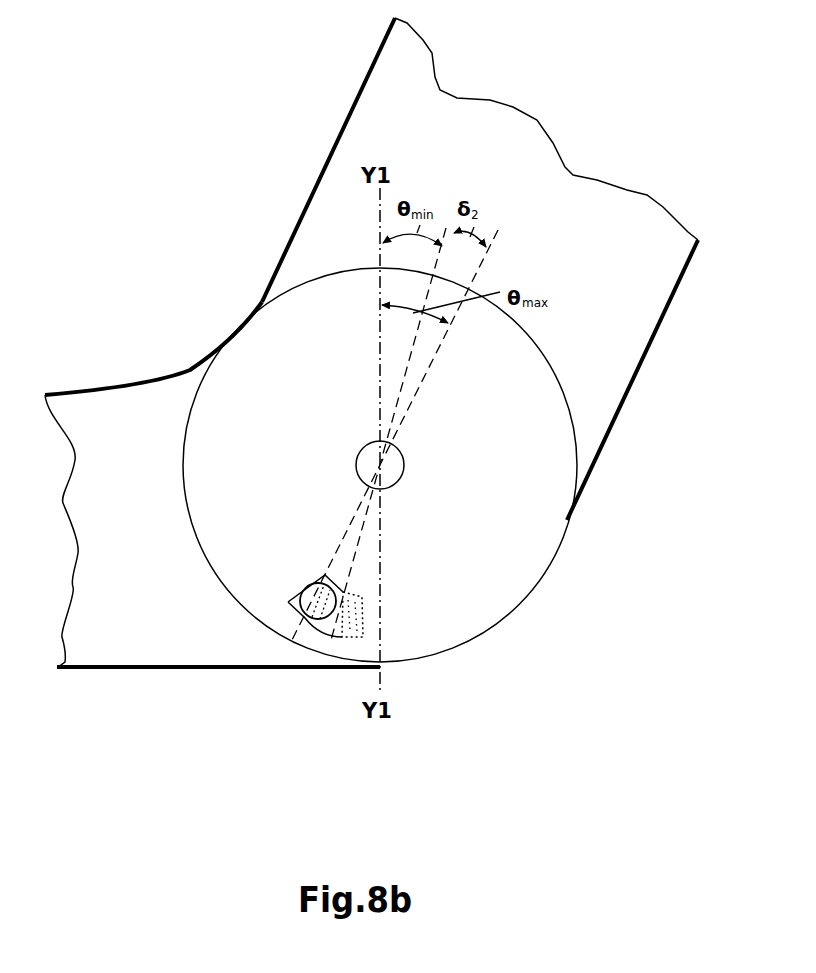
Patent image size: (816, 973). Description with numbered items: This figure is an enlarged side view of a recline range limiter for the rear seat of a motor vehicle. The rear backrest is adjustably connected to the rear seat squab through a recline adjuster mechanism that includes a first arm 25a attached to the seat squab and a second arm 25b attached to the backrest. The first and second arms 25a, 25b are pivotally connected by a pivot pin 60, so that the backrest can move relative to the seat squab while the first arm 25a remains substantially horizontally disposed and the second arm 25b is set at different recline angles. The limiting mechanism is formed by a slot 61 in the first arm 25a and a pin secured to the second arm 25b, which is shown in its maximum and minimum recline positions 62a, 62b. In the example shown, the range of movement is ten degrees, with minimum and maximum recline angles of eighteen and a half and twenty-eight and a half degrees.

The first arm 25a is at (135, 385).
The second arm 25b is at (653, 337).
The pivot pin 60 is at (357, 457).
The slot 61 is at (365, 630).
The pin in maximum recline position 62a is at (307, 617).
The pin in minimum recline position 62b is at (341, 640).